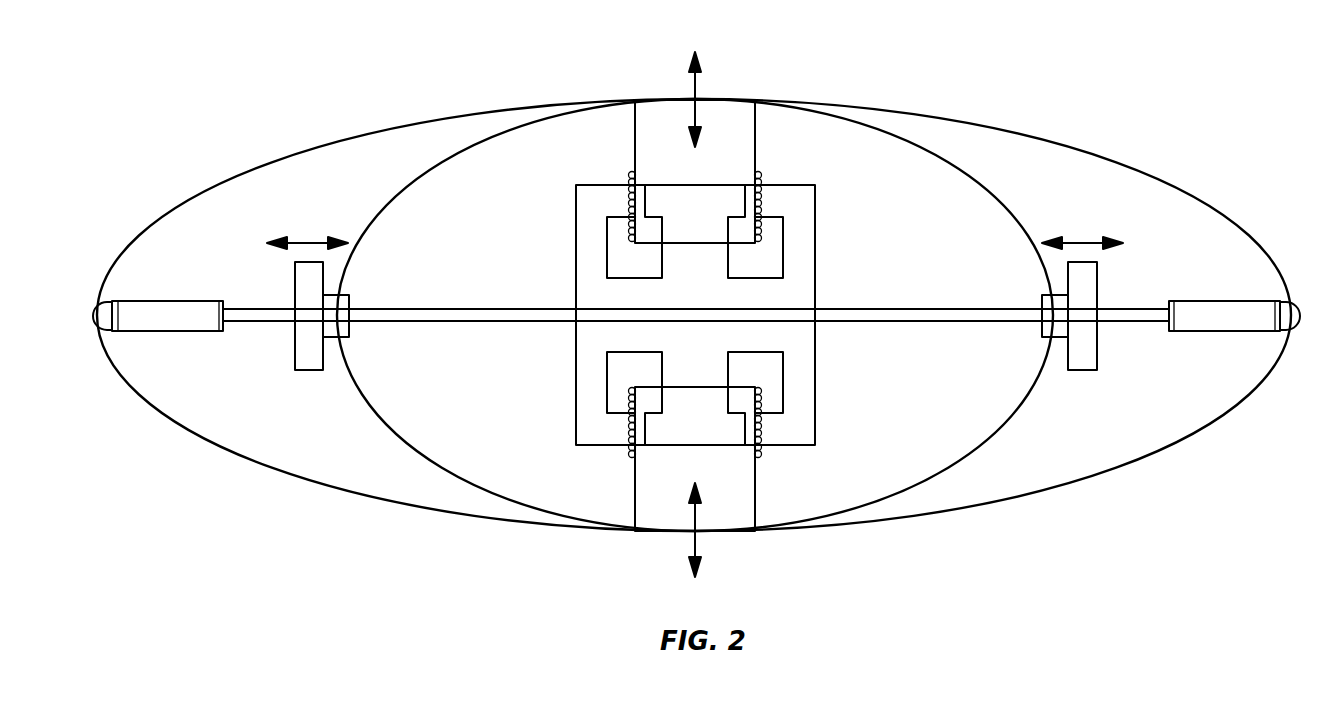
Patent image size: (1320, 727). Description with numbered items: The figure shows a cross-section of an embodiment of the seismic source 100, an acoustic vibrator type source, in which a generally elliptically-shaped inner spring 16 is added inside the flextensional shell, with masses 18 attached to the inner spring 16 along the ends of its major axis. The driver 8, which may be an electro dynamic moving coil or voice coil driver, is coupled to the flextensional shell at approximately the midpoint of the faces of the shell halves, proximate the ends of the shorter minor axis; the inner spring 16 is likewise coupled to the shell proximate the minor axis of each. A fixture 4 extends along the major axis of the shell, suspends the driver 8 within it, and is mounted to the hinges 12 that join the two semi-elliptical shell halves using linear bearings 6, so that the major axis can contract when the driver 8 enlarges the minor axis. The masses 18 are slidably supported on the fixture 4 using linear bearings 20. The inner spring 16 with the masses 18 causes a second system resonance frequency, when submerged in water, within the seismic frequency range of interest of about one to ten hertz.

The seismic source 100 is at (353, 60).
The fixture 4 is at (918, 308).
The linear bearings 6 is at (170, 333).
The driver 8 is at (832, 226).
The hinges 12 is at (103, 302).
The inner spring 16 is at (990, 187).
The masses 18 is at (310, 372).
The linear bearings 20 is at (352, 338).